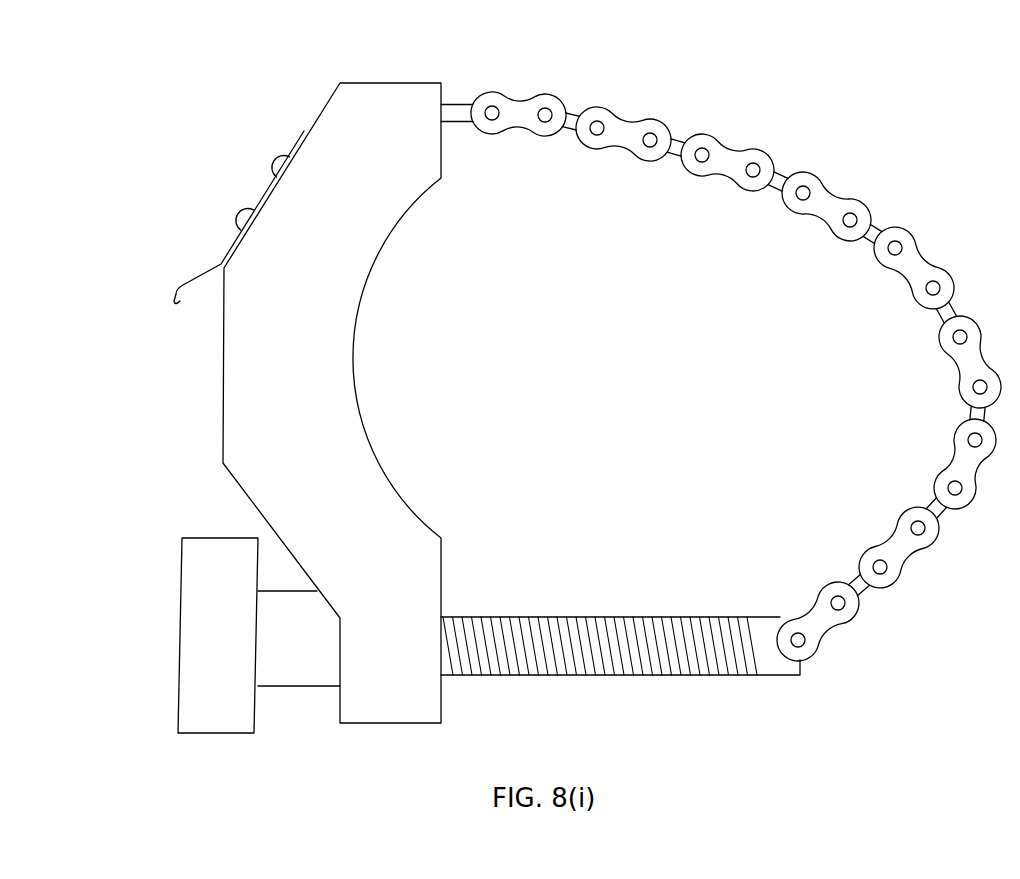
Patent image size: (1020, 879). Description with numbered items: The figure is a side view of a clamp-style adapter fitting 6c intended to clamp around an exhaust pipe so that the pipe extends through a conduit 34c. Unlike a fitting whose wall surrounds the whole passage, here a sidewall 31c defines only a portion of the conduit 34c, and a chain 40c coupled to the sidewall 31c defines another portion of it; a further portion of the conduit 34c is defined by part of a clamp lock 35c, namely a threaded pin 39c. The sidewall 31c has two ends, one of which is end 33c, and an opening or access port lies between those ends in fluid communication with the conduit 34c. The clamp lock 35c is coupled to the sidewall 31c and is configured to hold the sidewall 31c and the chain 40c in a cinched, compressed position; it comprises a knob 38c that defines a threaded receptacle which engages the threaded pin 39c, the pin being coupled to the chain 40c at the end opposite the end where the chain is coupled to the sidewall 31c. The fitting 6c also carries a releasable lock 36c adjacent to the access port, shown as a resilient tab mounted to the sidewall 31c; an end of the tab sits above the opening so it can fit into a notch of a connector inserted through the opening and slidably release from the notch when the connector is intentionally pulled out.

The adapter fitting 6c is at (803, 57).
The sidewall 31c is at (373, 270).
The end of sidewall 33c is at (1019, 734).
The conduit 34c is at (721, 376).
The clamp lock 35c is at (222, 735).
The releasable lock 36c is at (200, 275).
The knob 38c is at (300, 688).
The threaded pin 39c is at (768, 675).
The chain 40c is at (792, 213).